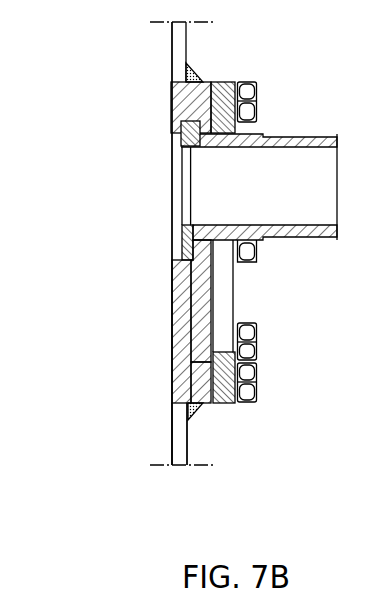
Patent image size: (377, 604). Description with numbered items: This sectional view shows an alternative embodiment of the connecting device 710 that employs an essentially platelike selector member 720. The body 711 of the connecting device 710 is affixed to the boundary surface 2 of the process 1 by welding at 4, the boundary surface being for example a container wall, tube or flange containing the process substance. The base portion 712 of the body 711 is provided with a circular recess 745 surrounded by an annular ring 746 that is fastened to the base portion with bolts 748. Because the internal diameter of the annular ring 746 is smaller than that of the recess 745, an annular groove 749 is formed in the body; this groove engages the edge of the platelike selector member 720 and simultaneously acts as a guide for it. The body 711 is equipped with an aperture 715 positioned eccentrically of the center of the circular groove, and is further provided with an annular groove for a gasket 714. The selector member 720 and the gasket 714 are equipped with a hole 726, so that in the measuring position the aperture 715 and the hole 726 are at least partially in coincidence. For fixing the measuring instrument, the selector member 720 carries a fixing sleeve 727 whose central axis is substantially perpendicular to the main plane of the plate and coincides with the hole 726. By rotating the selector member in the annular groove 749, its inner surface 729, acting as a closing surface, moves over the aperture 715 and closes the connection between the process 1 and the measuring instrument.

The process 1 is at (115, 370).
The boundary surface 2 is at (177, 443).
The welding 4 is at (196, 408).
The pipe joint assembly 710 is at (75, 388).
The body 711 is at (207, 72).
The base portion 712 is at (181, 96).
The gasket 714 is at (187, 247).
The aperture 715 is at (173, 157).
The selector member 720 is at (257, 280).
The hole 726 is at (212, 192).
The fixing sleeve 727 is at (260, 225).
The inner surface 729 is at (190, 285).
The circular recess 745 is at (195, 343).
The annular ring 746 is at (212, 109).
The bolts 748 is at (258, 110).
The annular groove 749 is at (202, 366).